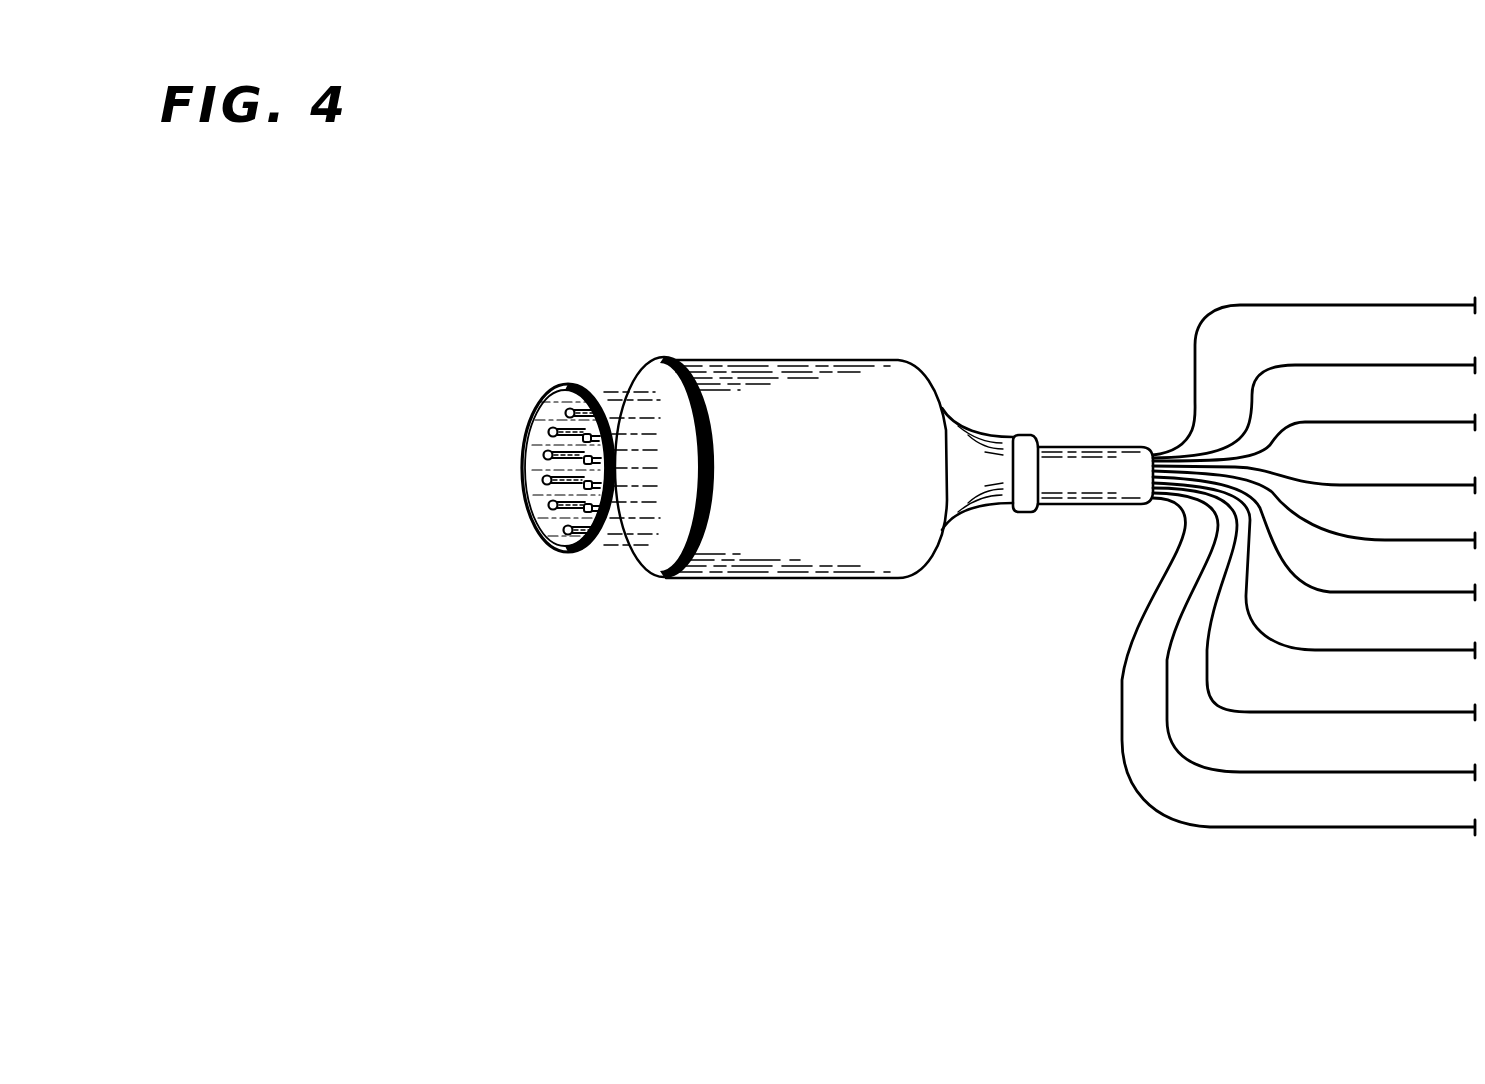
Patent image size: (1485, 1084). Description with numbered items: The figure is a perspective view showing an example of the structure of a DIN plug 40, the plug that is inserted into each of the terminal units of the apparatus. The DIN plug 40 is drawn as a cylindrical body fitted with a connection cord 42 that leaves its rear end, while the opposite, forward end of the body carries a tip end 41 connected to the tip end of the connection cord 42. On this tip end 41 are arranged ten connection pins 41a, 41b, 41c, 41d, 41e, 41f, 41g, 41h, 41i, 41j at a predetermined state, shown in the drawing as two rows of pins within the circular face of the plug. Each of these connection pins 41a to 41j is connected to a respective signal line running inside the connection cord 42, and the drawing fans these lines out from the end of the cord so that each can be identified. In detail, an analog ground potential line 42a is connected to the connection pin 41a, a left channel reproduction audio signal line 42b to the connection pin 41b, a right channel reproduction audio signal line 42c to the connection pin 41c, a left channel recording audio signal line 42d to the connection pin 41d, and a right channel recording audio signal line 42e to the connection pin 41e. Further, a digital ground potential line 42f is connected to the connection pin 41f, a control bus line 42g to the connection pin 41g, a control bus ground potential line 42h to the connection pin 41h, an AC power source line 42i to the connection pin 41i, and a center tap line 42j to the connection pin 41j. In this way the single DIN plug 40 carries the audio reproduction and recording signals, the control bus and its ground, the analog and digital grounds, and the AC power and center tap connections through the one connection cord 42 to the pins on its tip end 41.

The DIN plug 40 is at (827, 563).
The tip end 41 is at (603, 393).
The connection pin 41a is at (562, 410).
The connection pin 41b is at (548, 432).
The connection pin 41c is at (543, 455).
The connection pin 41d is at (542, 481).
The connection pin 41e is at (548, 508).
The connection pin 41f is at (562, 533).
The connection pin 41g is at (604, 526).
The connection pin 41h is at (607, 488).
The connection pin 41i is at (612, 462).
The connection pin 41j is at (605, 441).
The connection cord 42 is at (1072, 452).
The analog ground potential line 42a is at (1393, 305).
The left channel reproduction audio signal line 42b is at (1383, 365).
The right channel reproduction audio signal line 42c is at (1383, 422).
The left channel recording audio signal line 42d is at (1387, 485).
The right channel recording audio signal line 42e is at (1397, 540).
The digital ground potential line 42f is at (1397, 592).
The control bus line 42g is at (1397, 650).
The control bus ground potential line 42h is at (1400, 712).
The AC power source line 42i is at (1400, 772).
The center tap line 42j is at (1400, 827).